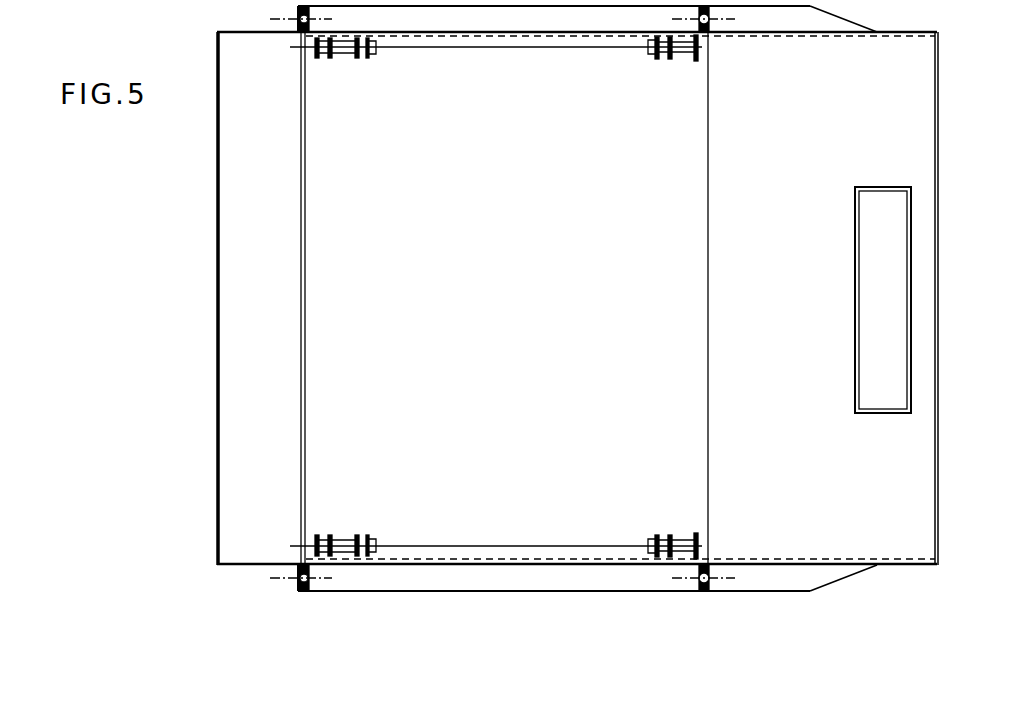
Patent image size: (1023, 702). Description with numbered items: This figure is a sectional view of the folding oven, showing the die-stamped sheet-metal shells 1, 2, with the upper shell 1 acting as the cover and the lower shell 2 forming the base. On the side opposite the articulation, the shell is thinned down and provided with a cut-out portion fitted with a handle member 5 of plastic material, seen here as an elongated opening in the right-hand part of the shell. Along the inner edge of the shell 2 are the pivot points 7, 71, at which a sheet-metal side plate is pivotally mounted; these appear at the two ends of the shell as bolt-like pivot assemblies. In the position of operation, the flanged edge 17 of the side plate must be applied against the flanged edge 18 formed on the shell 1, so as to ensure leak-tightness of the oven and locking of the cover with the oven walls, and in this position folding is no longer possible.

The shell 1 is at (216, 277).
The shell 2 is at (572, 596).
The handle member 5 is at (897, 285).
The pivot 7 is at (668, 64).
The pivot 71 is at (343, 60).
The flanged edge 17 is at (306, 485).
The flanged edge 18 is at (300, 366).